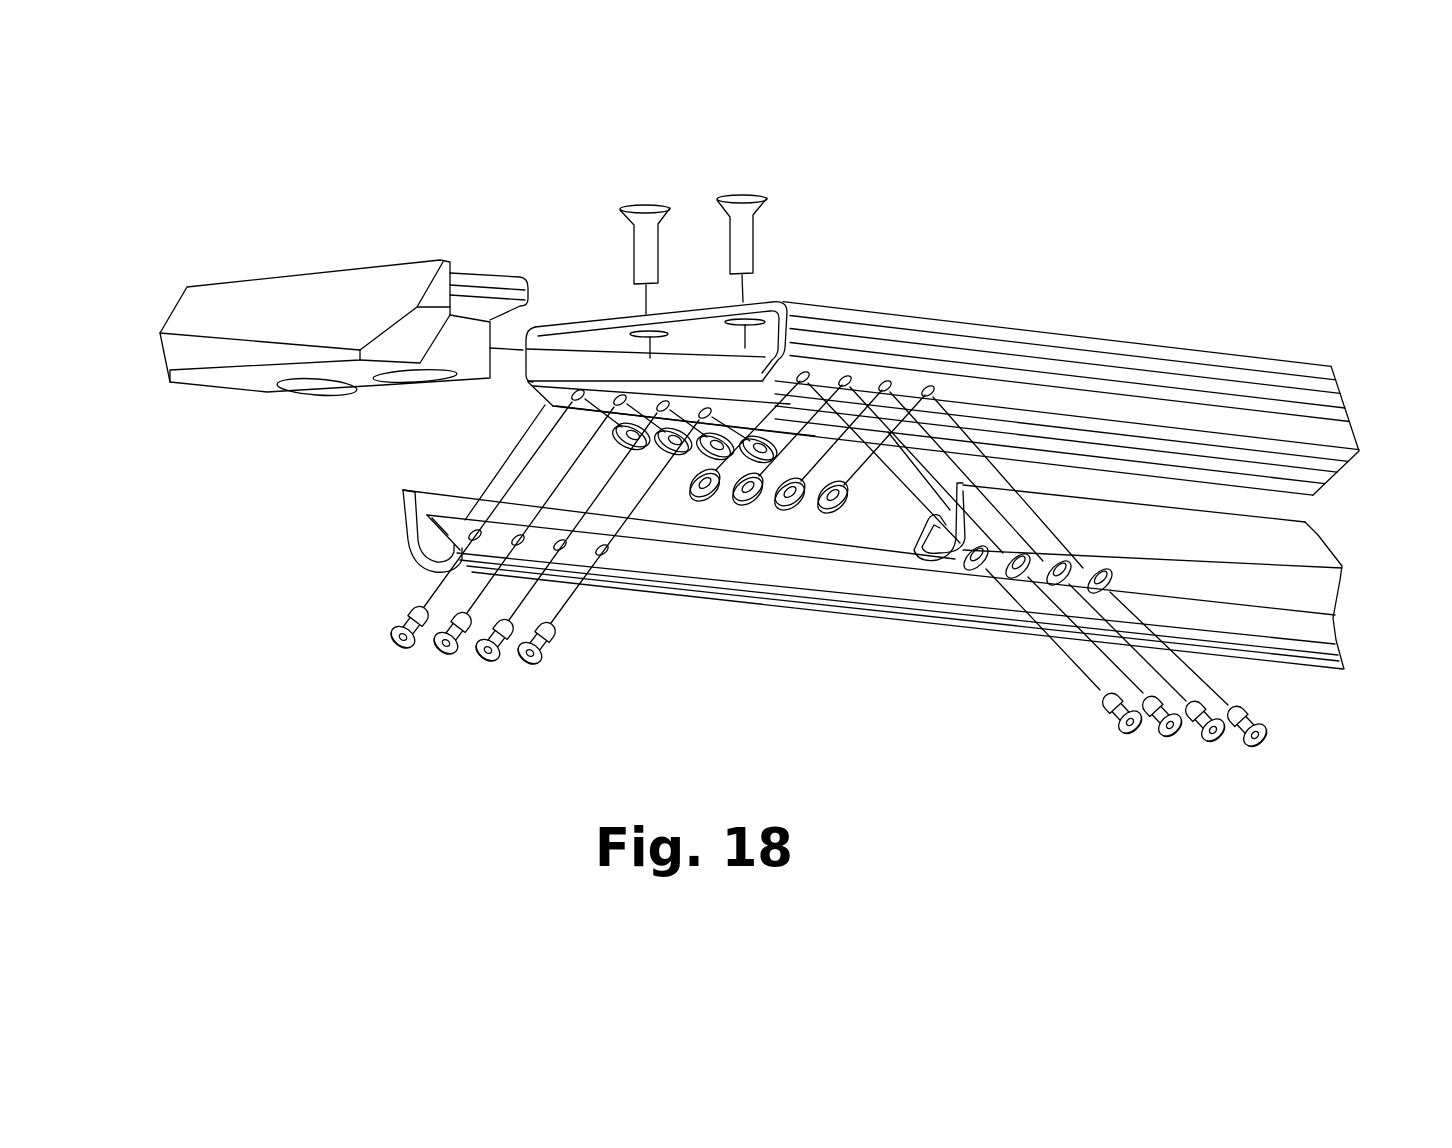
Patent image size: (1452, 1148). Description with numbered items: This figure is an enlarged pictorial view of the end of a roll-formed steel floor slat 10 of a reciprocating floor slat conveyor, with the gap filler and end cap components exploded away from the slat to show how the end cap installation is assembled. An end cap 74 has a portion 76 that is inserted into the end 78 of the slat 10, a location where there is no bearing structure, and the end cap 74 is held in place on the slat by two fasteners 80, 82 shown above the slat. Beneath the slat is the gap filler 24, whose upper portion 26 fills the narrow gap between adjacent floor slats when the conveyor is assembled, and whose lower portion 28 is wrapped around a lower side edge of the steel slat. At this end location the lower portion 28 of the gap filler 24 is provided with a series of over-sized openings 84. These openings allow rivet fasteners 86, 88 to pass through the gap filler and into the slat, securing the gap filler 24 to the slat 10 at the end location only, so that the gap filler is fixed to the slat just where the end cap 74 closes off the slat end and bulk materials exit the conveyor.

The floor slat 10 is at (1075, 322).
The gap filler 24 is at (1330, 531).
The upper portion of the gap filler 26 is at (1197, 590).
The lower portion of the gap filler 28 is at (1224, 530).
The end cap 74 is at (350, 256).
The portion of the end cap 76 is at (487, 277).
The end of the slat 78 is at (598, 314).
The fastener 80 is at (656, 203).
The fastener 82 is at (752, 192).
The over-sized openings 84 is at (1038, 590).
The rivet fastener 86 is at (1194, 752).
The rivet fastener 88 is at (742, 510).